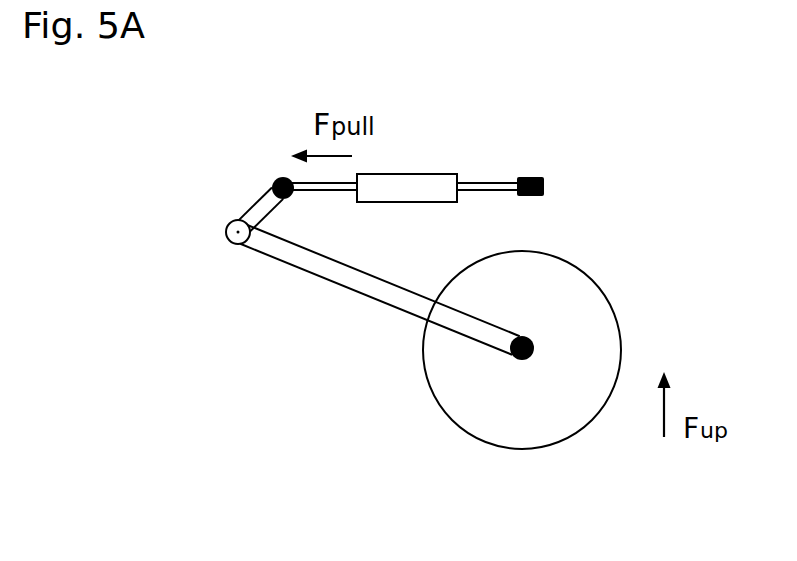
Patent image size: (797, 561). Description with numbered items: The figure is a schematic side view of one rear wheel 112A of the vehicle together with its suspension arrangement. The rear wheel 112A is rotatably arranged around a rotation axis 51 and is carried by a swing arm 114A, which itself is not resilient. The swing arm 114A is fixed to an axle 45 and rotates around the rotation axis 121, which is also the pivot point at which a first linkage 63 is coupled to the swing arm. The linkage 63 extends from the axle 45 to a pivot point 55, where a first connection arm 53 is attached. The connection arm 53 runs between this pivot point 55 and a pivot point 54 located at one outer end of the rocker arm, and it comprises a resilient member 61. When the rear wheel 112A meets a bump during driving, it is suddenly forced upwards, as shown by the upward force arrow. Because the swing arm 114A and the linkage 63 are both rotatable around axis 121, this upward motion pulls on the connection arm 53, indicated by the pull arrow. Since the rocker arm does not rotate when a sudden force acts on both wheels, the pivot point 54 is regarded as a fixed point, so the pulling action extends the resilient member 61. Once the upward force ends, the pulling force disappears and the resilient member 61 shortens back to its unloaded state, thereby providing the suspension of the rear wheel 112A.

The axle 45 is at (238, 246).
The rotation axis 51 is at (523, 336).
The first connection arm 53 is at (332, 190).
The pivot point 54 is at (537, 178).
The pivot point 55 is at (280, 177).
The resilient member 61 is at (418, 180).
The first linkage 63 is at (237, 220).
The first rear wheel 112A is at (548, 430).
The swing arm 114A is at (342, 278).
The rotation axis 121 is at (237, 233).